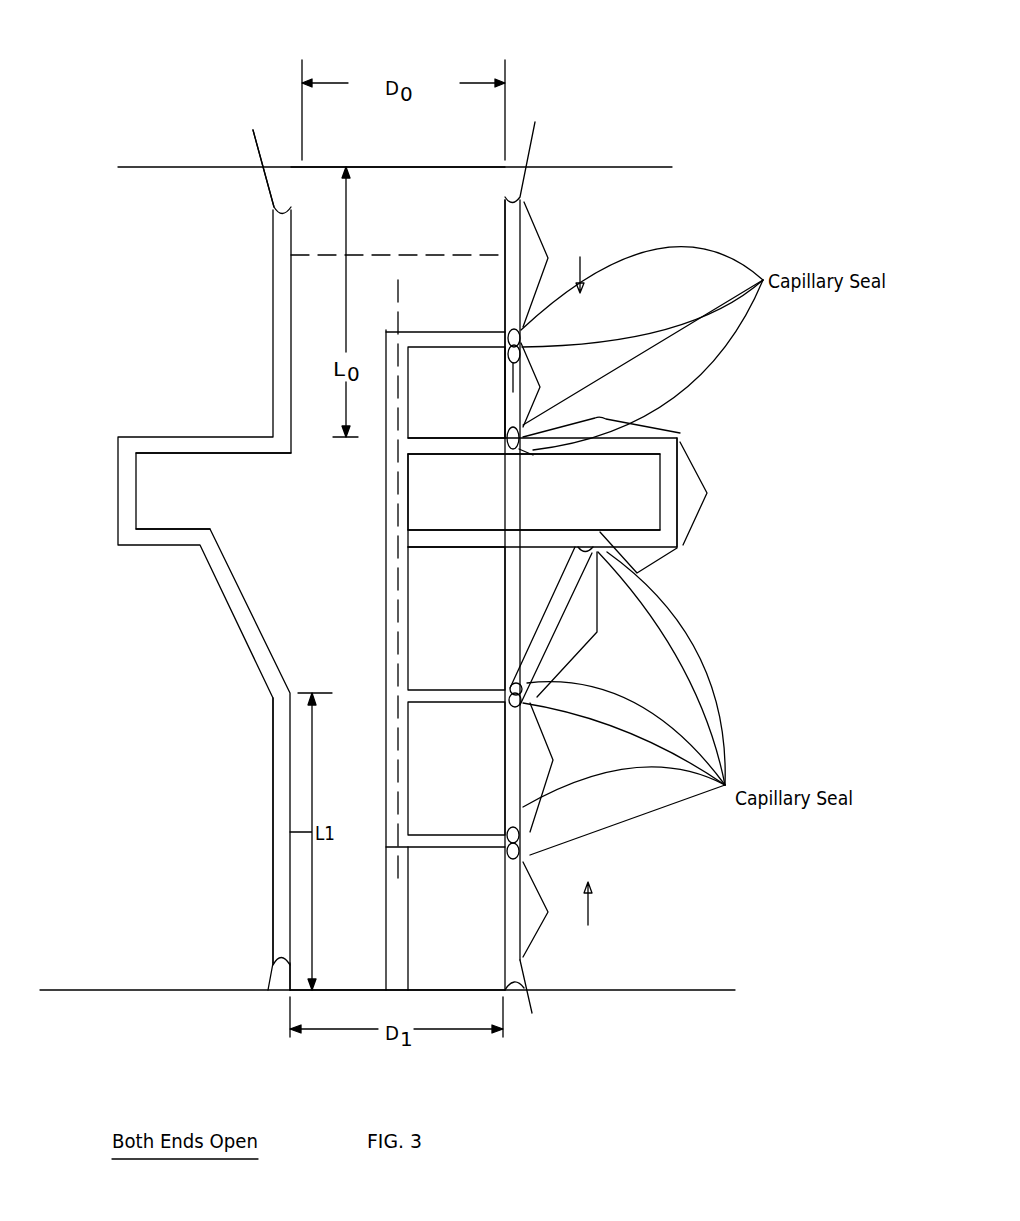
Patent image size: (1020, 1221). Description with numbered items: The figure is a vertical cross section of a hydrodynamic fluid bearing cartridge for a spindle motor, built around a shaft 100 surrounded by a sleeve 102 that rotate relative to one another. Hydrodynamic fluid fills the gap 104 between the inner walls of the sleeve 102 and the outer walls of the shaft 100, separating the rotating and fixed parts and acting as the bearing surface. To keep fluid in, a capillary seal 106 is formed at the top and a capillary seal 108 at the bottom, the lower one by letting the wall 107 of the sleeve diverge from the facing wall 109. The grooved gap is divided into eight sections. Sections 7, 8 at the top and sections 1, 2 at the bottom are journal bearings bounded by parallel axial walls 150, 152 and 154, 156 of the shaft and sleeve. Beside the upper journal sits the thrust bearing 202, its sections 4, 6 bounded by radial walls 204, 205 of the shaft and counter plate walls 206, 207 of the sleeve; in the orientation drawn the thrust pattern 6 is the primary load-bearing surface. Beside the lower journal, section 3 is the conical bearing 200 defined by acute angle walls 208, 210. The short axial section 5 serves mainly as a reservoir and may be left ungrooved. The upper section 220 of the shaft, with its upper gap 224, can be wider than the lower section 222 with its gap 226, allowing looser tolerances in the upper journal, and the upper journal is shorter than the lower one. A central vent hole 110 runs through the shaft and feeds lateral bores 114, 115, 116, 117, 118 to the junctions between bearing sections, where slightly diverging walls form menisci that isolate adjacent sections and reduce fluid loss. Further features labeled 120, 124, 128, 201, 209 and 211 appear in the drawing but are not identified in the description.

The gap section 1 is at (557, 909).
The gap section 2 is at (550, 767).
The gap section 3 is at (573, 624).
The gap section 4 is at (638, 563).
The short axial section 5 is at (701, 493).
The gap section 6 is at (601, 415).
The gap section 7 is at (538, 385).
The gap section 8 is at (553, 264).
The shaft 100 is at (210, 504).
The sleeve 102 is at (112, 392).
The gap 104 is at (520, 128).
The capillary seal 106 is at (283, 195).
The wall of the sleeve 107 is at (270, 980).
The capillary seal 108 is at (278, 983).
The facing wall 109 is at (292, 967).
The central vent hole 110 is at (422, 592).
The lateral bore 114 is at (428, 338).
The lateral bore 115 is at (415, 447).
The lateral bore 116 is at (537, 530).
The lateral bore 117 is at (418, 697).
The lateral bore 118 is at (442, 840).
The lower meniscus 120 is at (552, 643).
The meniscus stem 124 is at (515, 378).
The plate upper surface 128 is at (440, 533).
The parallel axial wall 150 is at (510, 248).
The parallel axial wall 152 is at (522, 343).
The parallel axial wall 154 is at (495, 930).
The parallel axial wall 156 is at (527, 872).
The conical bearing 200 is at (507, 644).
The upper hub 201 is at (493, 394).
The thrust bearing 202 is at (644, 479).
The radial wall of the shaft 204 is at (533, 455).
The radial wall of the shaft 205 is at (605, 540).
The counter plate wall 206 is at (613, 423).
The counter plate wall 207 is at (640, 545).
The acute angle wall 208 is at (562, 575).
The plate inner 209 is at (660, 467).
The acute angle wall 210 is at (577, 625).
The plate outer edge 211 is at (680, 492).
The upper section of the fixed shaft 220 is at (373, 163).
The lower section of the shaft 222 is at (325, 990).
The upper gap 224 is at (283, 253).
The lower gap 226 is at (277, 815).